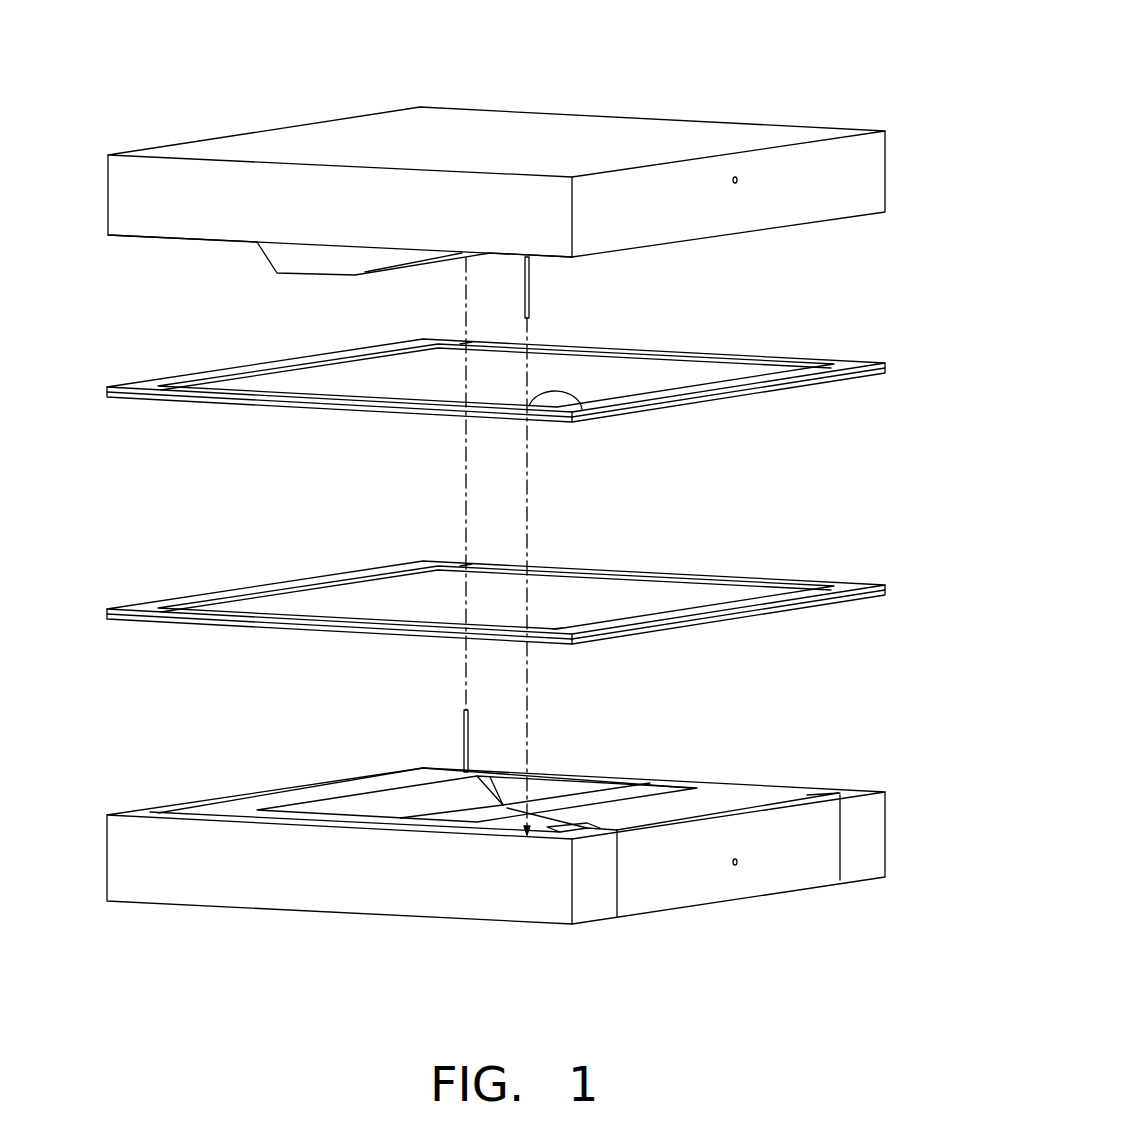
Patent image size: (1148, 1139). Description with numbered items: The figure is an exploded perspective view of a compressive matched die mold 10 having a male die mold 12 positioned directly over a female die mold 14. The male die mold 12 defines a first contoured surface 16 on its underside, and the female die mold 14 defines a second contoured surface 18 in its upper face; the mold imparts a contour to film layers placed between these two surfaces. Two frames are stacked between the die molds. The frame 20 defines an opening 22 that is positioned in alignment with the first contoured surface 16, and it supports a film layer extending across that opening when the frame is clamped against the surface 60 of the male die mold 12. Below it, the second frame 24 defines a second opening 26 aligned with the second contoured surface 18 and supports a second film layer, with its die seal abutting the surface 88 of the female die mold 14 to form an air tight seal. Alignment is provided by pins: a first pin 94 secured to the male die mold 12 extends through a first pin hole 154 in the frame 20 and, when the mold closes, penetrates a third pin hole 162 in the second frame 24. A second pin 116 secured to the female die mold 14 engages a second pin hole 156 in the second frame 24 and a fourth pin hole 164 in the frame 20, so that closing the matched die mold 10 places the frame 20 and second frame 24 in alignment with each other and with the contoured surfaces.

The matched die mold 10 is at (720, 59).
The male die mold 12 is at (746, 133).
The female die mold 14 is at (490, 847).
The first contoured surface 16 is at (317, 260).
The second contoured surface 18 is at (418, 805).
The frame 20 is at (504, 366).
The opening 22 is at (597, 379).
The second frame 24 is at (503, 566).
The second opening 26 is at (568, 600).
The surface of male die mold 60 is at (157, 240).
The surface of female die mold 88 is at (150, 813).
The first pin 94 is at (530, 293).
The second pin 116 is at (462, 730).
The first pin hole 154 is at (593, 413).
The second pin hole 156 is at (465, 565).
The third pin hole 162 is at (528, 628).
The fourth pin hole 164 is at (466, 343).